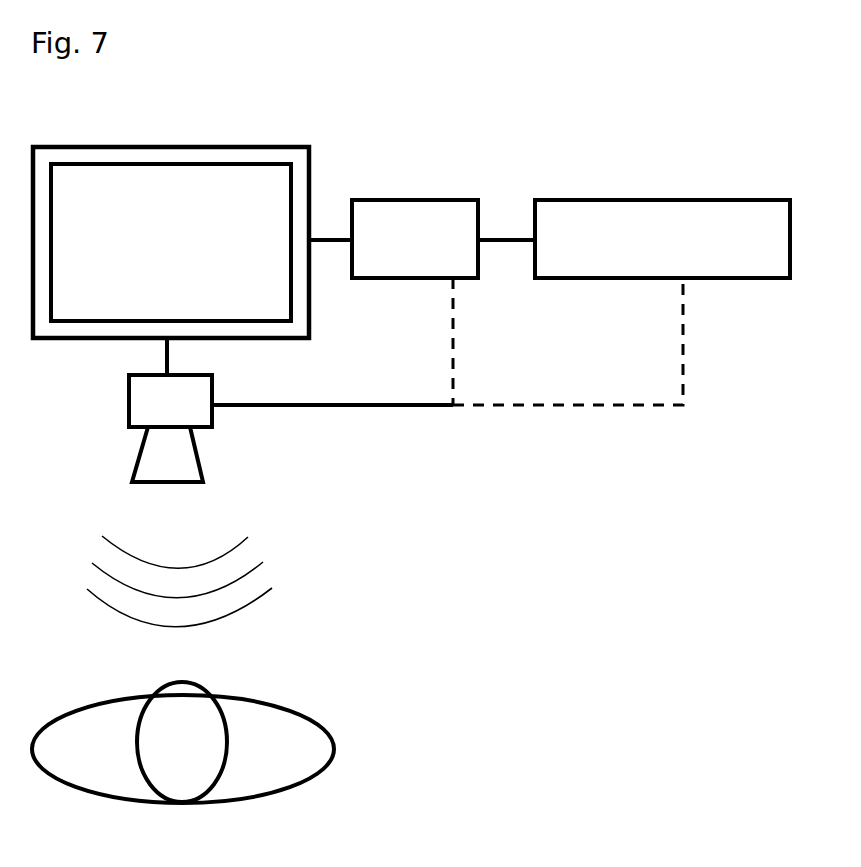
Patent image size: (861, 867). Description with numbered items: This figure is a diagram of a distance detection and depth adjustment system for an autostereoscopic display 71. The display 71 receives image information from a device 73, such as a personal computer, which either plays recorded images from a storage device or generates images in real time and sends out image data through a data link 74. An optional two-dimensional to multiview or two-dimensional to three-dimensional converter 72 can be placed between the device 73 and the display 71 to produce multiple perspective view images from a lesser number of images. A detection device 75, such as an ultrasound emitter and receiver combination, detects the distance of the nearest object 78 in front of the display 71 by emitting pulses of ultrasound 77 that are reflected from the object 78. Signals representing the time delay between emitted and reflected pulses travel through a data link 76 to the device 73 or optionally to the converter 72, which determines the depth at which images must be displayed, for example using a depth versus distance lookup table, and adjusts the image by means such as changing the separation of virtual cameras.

The autostereoscopic display 71 is at (190, 178).
The 2D to multiview or 2D to 3D converter 72 is at (426, 218).
The device 73 is at (680, 230).
The data link 74 is at (422, 293).
The detection device 75 is at (145, 410).
The data link 76 is at (402, 405).
The ultrasound waves 77 is at (110, 560).
The object 78 is at (283, 735).